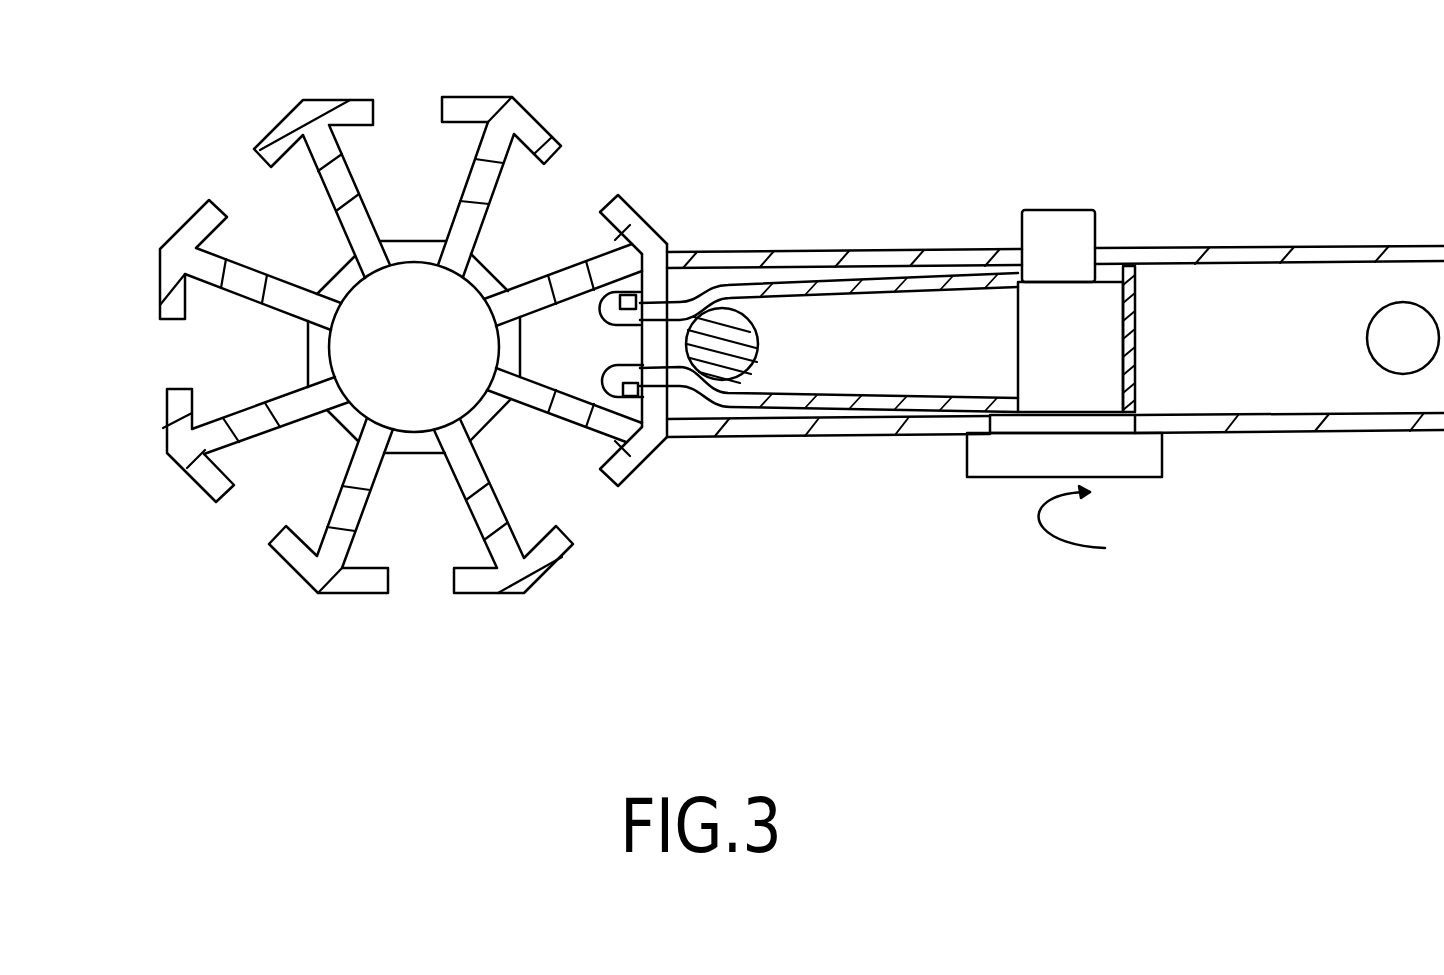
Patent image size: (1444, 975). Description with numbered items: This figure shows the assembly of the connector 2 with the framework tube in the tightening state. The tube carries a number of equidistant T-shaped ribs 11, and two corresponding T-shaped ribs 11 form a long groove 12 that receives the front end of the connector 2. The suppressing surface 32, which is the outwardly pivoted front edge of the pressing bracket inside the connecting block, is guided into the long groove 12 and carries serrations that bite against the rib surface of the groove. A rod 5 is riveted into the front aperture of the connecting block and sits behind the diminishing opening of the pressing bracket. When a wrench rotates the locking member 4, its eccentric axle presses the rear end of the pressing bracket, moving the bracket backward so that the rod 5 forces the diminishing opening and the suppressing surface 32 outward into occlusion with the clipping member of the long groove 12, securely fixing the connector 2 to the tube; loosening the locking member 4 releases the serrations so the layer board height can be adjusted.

The connector 2 is at (1163, 238).
The locking member 4 is at (1128, 478).
The rod 5 is at (737, 318).
The T-shaped rib 11 is at (648, 453).
The long groove 12 is at (556, 325).
The suppressing surface 32 is at (652, 233).